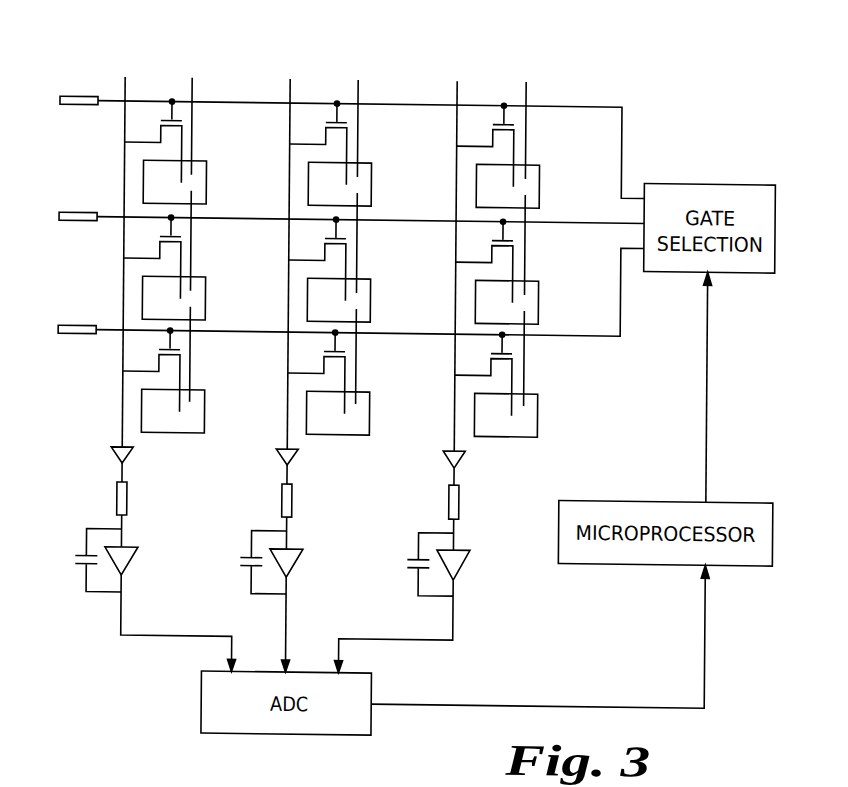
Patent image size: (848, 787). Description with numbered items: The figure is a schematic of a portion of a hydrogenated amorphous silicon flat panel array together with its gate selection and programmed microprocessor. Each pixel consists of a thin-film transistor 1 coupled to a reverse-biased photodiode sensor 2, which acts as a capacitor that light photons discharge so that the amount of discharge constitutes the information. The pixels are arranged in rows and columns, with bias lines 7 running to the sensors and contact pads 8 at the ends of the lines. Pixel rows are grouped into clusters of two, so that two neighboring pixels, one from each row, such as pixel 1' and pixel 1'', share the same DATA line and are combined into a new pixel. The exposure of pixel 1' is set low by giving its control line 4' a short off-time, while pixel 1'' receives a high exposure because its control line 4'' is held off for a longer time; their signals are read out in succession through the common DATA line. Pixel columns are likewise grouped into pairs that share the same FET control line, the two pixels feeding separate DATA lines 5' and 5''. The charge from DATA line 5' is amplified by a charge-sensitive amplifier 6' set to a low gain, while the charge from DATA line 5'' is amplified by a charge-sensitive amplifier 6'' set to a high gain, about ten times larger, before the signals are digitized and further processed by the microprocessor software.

The thin-film transistor 1 is at (544, 375).
The pixel 1' is at (105, 139).
The pixel 1'' is at (103, 255).
The photodiode sensor 2 is at (553, 414).
The control line 4' is at (371, 128).
The control line 4'' is at (370, 197).
The DATA line 5' is at (271, 230).
The DATA line 5'' is at (437, 231).
The charge-sensitive amplifier 6' is at (299, 586).
The charge-sensitive amplifier 6'' is at (469, 586).
The bias line 7 is at (192, 84).
The contact pad 8 is at (78, 96).